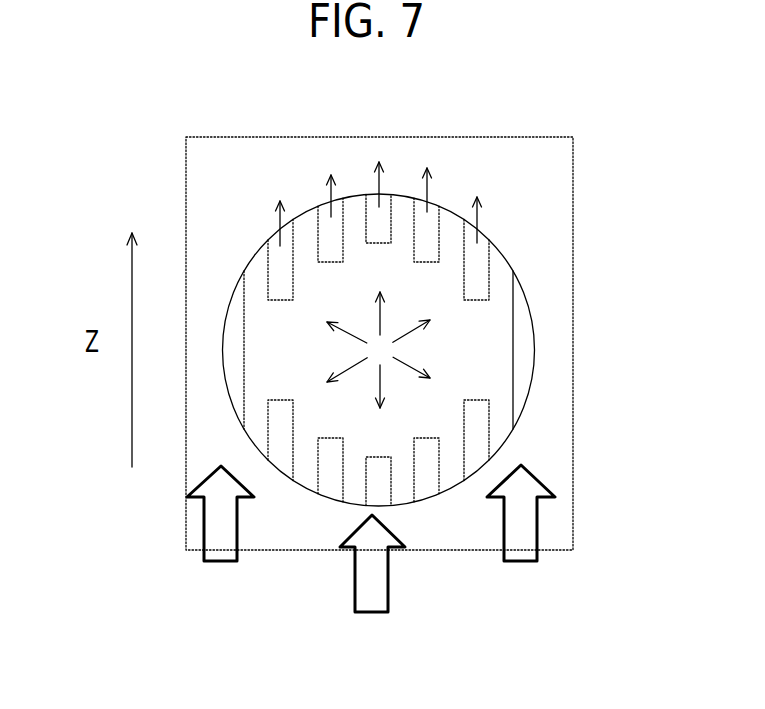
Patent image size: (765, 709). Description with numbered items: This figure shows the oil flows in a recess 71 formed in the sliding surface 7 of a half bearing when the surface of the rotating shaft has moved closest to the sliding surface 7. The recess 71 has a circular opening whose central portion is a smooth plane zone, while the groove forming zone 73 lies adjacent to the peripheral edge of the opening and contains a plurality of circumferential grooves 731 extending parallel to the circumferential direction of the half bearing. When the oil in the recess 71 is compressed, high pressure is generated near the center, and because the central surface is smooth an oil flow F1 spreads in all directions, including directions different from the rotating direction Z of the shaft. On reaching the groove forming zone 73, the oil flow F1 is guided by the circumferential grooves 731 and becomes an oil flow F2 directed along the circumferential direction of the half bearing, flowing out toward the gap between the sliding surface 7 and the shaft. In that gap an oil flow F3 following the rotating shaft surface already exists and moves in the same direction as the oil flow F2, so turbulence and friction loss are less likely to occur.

The sliding surface 7 is at (492, 155).
The recess 71 is at (355, 193).
The groove forming zone 73 is at (253, 293).
The circumferential grooves 731 is at (278, 262).
The oil flow F1 is at (393, 338).
The oil flow F2 is at (478, 222).
The oil flow F3 is at (522, 523).